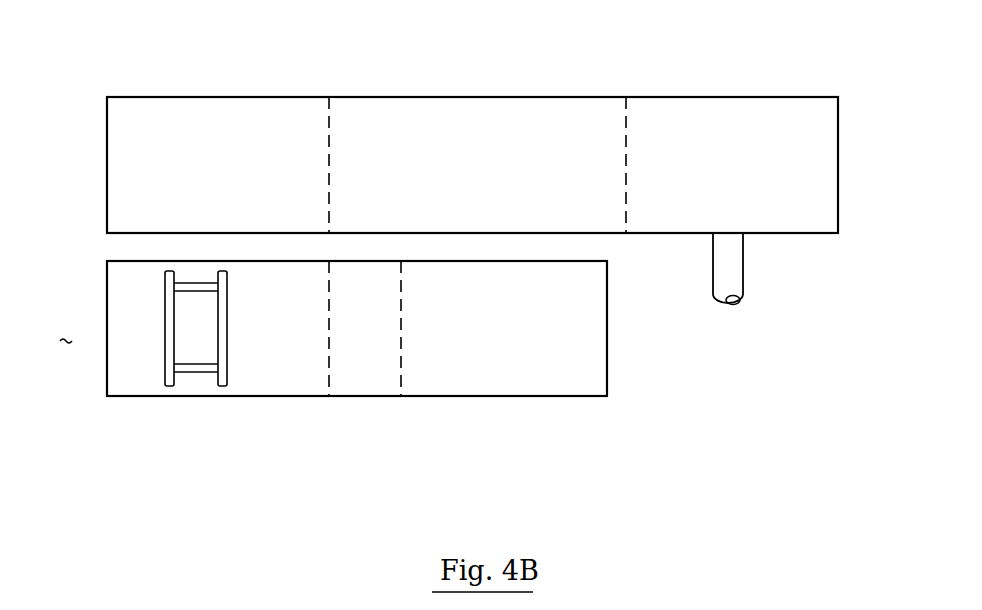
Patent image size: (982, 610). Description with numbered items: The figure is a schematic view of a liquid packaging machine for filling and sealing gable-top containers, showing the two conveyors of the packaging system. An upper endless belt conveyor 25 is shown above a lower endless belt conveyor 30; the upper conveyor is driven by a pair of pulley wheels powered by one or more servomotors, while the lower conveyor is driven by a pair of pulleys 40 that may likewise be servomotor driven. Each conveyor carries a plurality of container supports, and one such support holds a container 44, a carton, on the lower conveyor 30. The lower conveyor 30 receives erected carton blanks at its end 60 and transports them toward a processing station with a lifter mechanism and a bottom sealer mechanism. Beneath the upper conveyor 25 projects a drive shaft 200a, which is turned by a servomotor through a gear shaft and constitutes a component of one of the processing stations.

The upper endless belt conveyor 25 is at (472, 126).
The lower endless belt conveyor 30 is at (400, 332).
The pulleys 40 is at (429, 368).
The container 44 is at (216, 372).
The end 60 is at (71, 328).
The drive shaft 200a is at (801, 290).